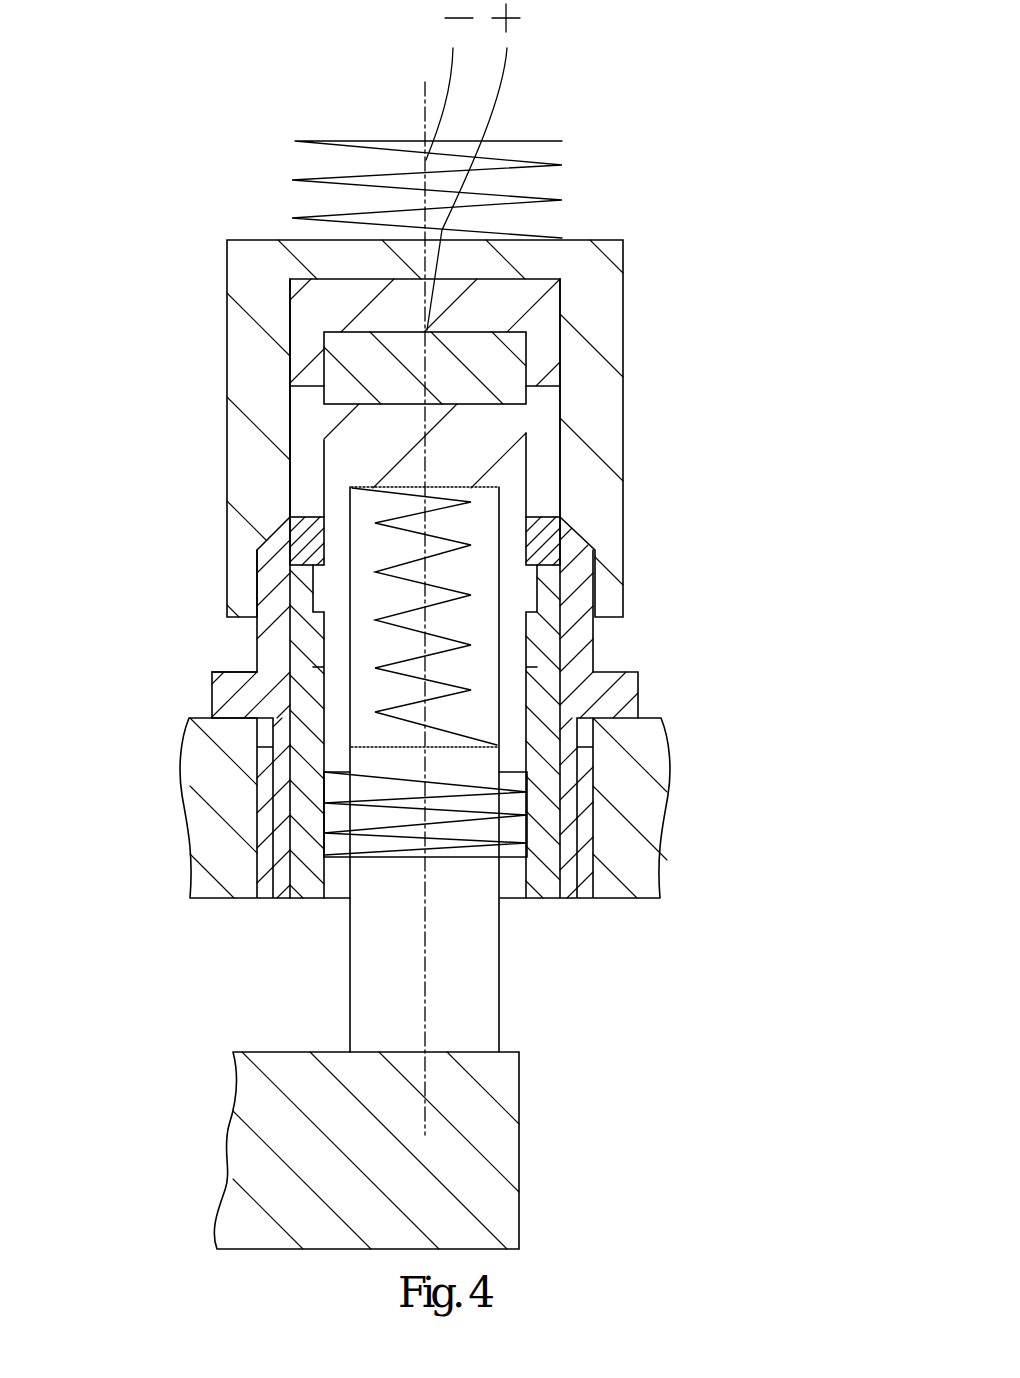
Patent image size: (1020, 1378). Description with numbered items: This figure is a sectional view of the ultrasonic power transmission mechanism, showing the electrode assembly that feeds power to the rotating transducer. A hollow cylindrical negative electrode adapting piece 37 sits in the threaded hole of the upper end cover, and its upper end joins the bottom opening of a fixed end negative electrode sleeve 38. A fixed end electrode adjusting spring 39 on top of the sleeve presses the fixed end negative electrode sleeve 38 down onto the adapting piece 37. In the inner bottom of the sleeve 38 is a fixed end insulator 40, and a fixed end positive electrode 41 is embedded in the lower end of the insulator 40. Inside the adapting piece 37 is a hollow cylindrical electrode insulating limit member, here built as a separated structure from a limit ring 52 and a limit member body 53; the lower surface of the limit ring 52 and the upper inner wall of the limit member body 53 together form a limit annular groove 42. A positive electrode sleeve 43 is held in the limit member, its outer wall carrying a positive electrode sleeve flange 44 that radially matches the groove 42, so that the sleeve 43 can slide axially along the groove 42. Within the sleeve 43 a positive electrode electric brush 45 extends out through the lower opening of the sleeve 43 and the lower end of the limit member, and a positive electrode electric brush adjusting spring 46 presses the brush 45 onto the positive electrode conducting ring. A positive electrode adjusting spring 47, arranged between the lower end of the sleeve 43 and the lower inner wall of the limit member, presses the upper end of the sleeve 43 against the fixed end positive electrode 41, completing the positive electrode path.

The hollow cylindrical negative electrode adapting piece 37 is at (575, 643).
The fixed end negative electrode sleeve 38 is at (610, 338).
The fixed end electrode adjusting spring 39 is at (562, 141).
The fixed end insulator 40 is at (327, 315).
The fixed end positive electrode 41 is at (347, 375).
The limit annular groove 42 is at (317, 647).
The positive electrode sleeve 43 is at (485, 450).
The positive electrode sleeve flange 44 is at (530, 587).
The positive electrode electric brush 45 is at (477, 945).
The positive electrode electric brush adjusting spring 46 is at (402, 715).
The positive electrode adjusting spring 47 is at (327, 835).
The limit ring 52 is at (268, 535).
The limit member body 53 is at (313, 707).